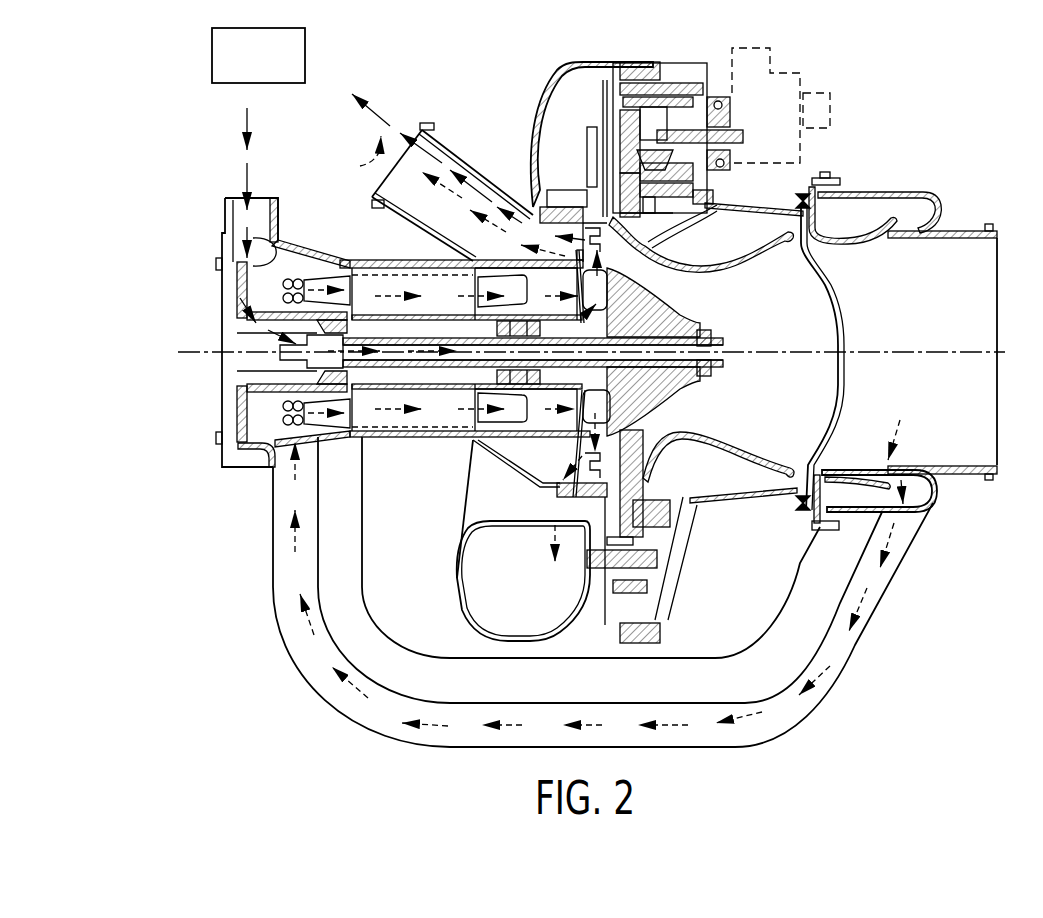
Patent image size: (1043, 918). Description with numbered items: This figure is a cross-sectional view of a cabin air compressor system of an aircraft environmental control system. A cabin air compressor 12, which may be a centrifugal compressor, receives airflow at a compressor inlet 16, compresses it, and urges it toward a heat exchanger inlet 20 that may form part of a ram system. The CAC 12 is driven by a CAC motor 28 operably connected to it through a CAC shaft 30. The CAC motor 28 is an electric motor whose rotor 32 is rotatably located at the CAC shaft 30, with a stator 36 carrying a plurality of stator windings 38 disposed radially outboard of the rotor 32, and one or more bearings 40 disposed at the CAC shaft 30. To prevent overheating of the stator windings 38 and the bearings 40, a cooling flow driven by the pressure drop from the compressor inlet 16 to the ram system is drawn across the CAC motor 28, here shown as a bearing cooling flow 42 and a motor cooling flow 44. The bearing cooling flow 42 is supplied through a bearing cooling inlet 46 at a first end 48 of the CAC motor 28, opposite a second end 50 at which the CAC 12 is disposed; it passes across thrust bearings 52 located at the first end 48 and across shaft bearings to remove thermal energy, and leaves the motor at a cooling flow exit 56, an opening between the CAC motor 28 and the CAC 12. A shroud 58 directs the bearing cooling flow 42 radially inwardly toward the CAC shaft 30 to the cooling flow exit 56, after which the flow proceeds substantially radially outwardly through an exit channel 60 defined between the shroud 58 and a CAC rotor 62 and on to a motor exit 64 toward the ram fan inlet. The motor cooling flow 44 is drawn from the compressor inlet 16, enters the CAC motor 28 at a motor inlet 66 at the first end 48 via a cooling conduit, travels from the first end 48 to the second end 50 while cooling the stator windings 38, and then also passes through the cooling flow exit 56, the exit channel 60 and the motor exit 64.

The cabin air compressor 12 is at (680, 82).
The compressor inlet 16 is at (907, 296).
The heat exchanger inlet 20 is at (212, 55).
The CAC motor 28 is at (373, 264).
The CAC shaft 30 is at (722, 349).
The rotor 32 is at (445, 379).
The stator 36 is at (398, 424).
The stator windings 38 is at (288, 415).
The bearings 40 is at (262, 390).
The bearing cooling flow 42 is at (246, 128).
The motor cooling flow 44 is at (925, 447).
The bearing cooling inlet 46 is at (225, 200).
The first end 48 is at (222, 293).
The second end 50 is at (613, 240).
The thrust bearings 52 is at (240, 312).
The cooling flow exit 56 is at (578, 297).
The shroud 58 is at (506, 256).
The exit channel 60 is at (638, 250).
The CAC rotor 62 is at (653, 385).
The motor exit 64 is at (430, 128).
The motor inlet 66 is at (938, 487).